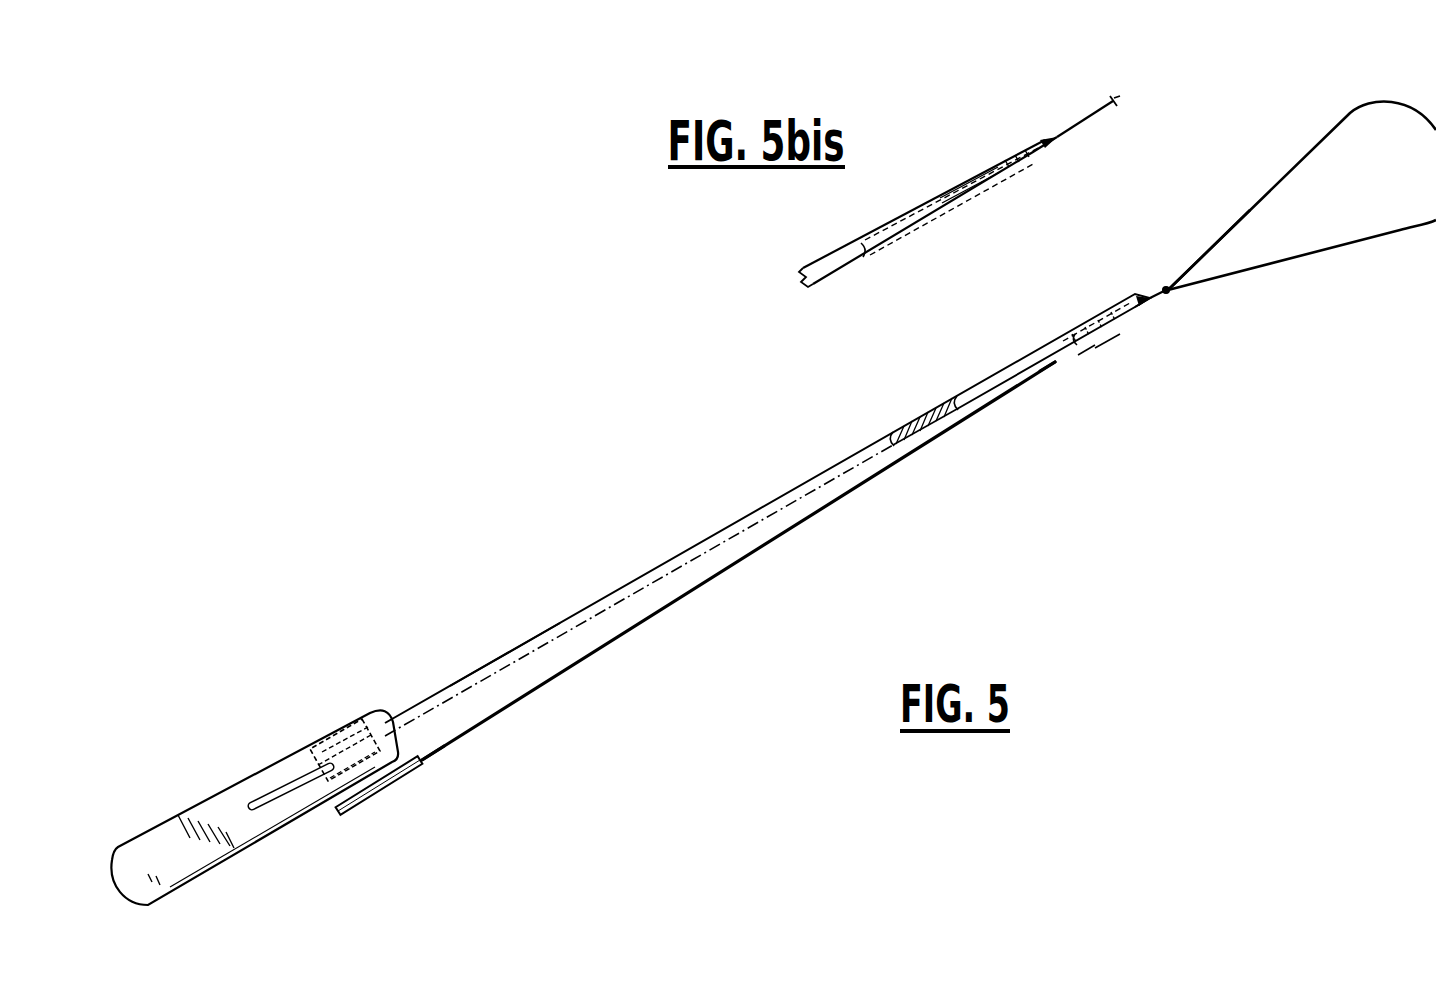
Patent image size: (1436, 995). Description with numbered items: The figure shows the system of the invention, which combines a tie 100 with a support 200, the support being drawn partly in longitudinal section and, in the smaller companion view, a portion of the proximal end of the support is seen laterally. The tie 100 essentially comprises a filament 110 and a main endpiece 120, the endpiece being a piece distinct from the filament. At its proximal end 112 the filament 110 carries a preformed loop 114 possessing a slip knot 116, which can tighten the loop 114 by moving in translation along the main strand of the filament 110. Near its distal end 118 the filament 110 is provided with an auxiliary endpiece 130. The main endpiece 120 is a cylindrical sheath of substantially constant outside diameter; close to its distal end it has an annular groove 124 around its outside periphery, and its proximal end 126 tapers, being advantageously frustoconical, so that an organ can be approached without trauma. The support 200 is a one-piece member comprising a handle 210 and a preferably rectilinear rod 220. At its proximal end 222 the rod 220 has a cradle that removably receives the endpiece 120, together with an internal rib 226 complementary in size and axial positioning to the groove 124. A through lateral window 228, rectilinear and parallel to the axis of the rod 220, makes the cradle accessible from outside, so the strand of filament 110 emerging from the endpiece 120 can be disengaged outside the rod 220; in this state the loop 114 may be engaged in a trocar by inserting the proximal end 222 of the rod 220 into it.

In FIG. 5, the tie 100 is at (685, 620).
In FIG. 5, the filament 110 is at (722, 574).
In FIG. 5bis, the filament 110 is at (1086, 115).
In FIG. 5, the proximal end 112 is at (1196, 252).
In FIG. 5, the preformed loop 114 is at (1356, 108).
In FIG. 5, the slip knot 116 is at (1172, 294).
In FIG. 5, the distal end 118 is at (442, 766).
In FIG. 5, the main endpiece 120 is at (1125, 308).
In FIG. 5bis, the main endpiece 120 is at (902, 232).
In FIG. 5, the annular groove 124 is at (1077, 337).
In FIG. 5, the proximal end 126 is at (1147, 310).
In FIG. 5, the auxiliary endpiece 130 is at (357, 807).
In FIG. 5, the support 200 is at (506, 625).
In FIG. 5, the handle 210 is at (243, 787).
In FIG. 5, the rod 220 is at (633, 588).
In FIG. 5bis, the rod 220 is at (808, 268).
In FIG. 5, the proximal end 222 is at (1105, 340).
In FIG. 5, the internal rib 226 is at (1087, 348).
In FIG. 5, the lateral window 228 is at (1060, 365).